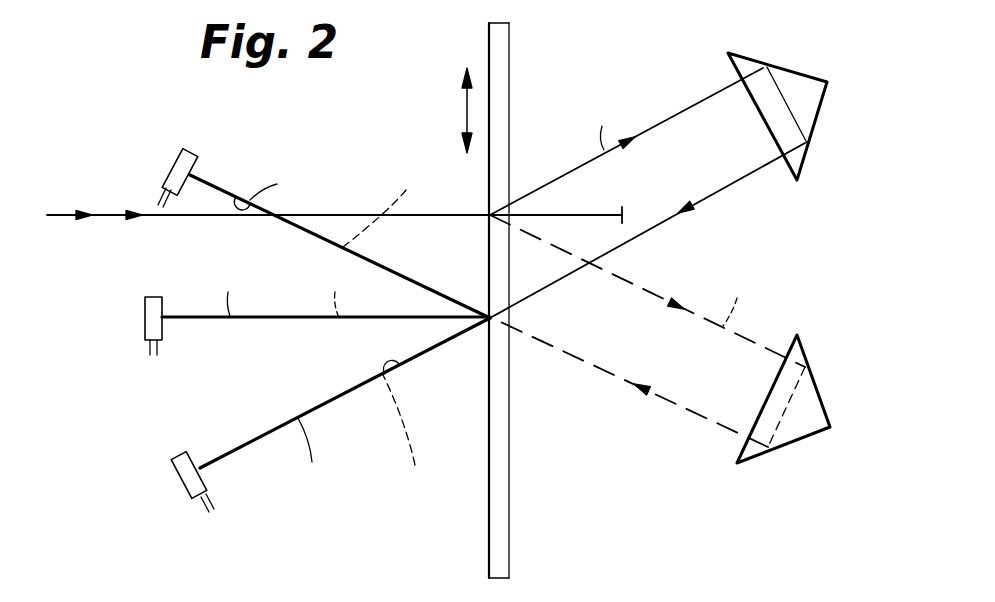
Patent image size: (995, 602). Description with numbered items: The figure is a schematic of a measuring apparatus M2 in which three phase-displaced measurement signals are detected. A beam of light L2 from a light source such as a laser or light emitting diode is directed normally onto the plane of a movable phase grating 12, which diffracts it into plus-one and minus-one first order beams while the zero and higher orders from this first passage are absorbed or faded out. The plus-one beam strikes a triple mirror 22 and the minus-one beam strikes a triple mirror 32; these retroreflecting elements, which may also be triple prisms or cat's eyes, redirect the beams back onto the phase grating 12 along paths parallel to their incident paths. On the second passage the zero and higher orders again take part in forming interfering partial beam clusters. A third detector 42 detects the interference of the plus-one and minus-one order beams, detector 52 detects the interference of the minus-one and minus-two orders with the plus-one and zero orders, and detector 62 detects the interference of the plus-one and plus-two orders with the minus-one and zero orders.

The phase grating 12 is at (497, 98).
The triple mirror 22 is at (793, 92).
The triple mirror 32 is at (810, 407).
The third detector 42 is at (150, 323).
The detector 52 is at (184, 479).
The detector 62 is at (180, 170).
The light beam L2 is at (58, 212).
The measuring apparatus M2 is at (594, 489).